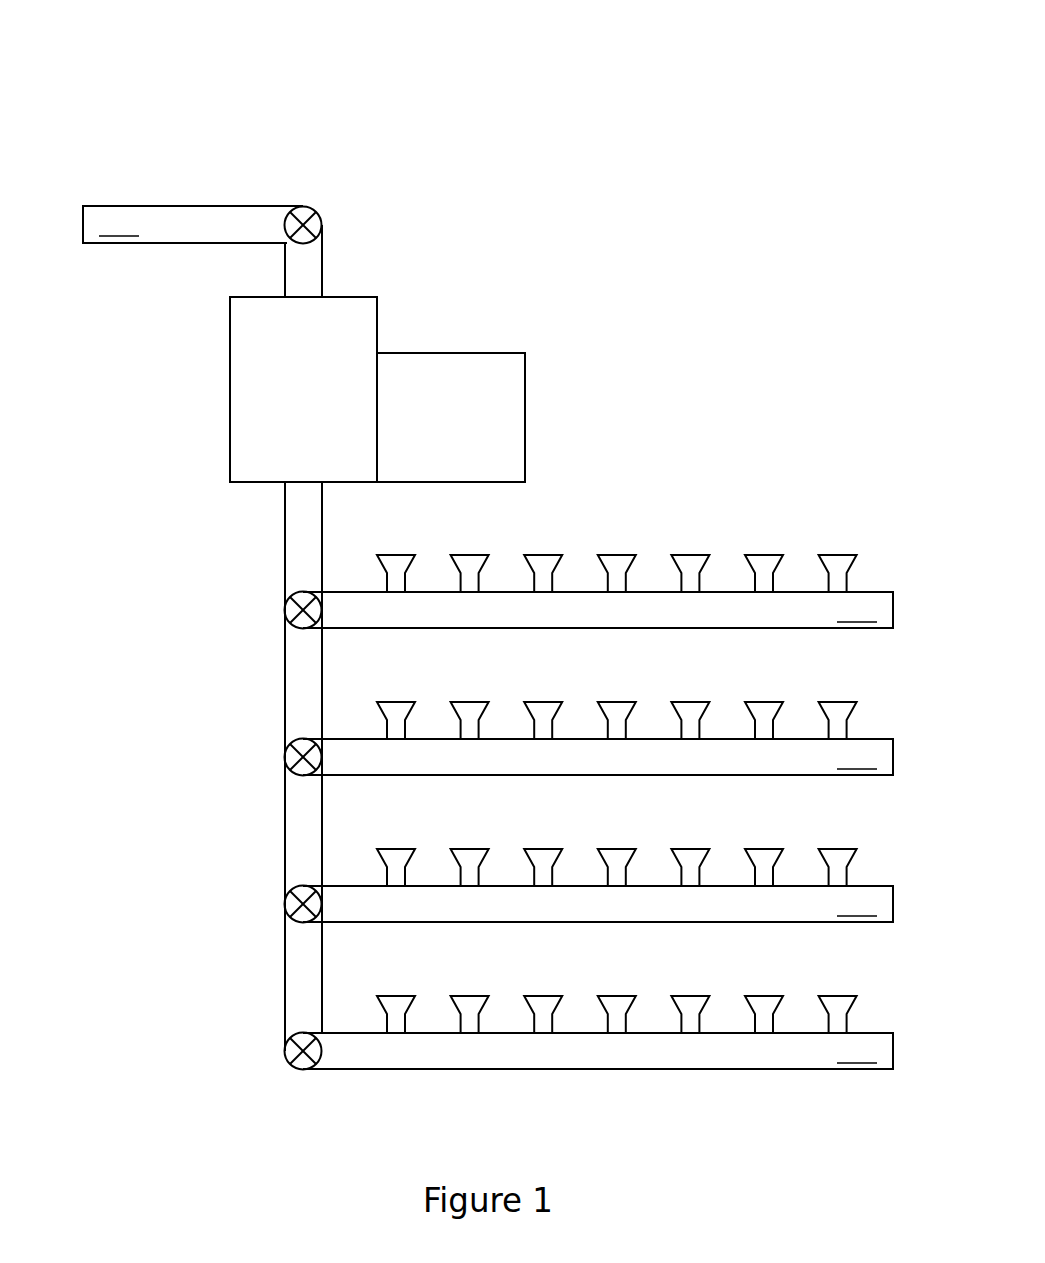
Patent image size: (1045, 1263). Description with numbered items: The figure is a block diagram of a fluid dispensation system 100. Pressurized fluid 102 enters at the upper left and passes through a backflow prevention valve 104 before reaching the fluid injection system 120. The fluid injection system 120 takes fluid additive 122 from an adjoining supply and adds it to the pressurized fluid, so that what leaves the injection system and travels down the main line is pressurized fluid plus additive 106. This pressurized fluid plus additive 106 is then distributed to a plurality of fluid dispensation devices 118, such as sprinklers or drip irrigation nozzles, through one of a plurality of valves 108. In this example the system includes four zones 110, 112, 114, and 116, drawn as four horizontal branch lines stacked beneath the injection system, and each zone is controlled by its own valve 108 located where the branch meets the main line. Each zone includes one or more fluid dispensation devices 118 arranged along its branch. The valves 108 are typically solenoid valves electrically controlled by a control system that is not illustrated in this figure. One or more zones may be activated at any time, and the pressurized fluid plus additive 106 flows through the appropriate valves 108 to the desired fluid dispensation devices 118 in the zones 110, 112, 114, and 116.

The fluid dispensation system 100 is at (488, 99).
The pressurized fluid 102 is at (193, 224).
The backflow prevention valve 104 is at (303, 207).
The pressurized fluid plus additive 106 is at (303, 704).
The valve 108 is at (303, 592).
The zone 110 is at (598, 548).
The zone 112 is at (598, 738).
The zone 114 is at (598, 885).
The zone 116 is at (598, 1032).
The fluid dispensation device 118 is at (543, 555).
The fluid injection system 120 is at (377, 297).
The fluid additive 122 is at (525, 353).